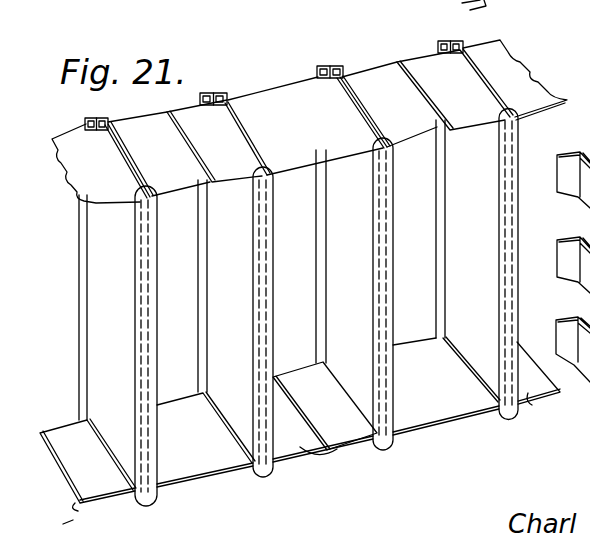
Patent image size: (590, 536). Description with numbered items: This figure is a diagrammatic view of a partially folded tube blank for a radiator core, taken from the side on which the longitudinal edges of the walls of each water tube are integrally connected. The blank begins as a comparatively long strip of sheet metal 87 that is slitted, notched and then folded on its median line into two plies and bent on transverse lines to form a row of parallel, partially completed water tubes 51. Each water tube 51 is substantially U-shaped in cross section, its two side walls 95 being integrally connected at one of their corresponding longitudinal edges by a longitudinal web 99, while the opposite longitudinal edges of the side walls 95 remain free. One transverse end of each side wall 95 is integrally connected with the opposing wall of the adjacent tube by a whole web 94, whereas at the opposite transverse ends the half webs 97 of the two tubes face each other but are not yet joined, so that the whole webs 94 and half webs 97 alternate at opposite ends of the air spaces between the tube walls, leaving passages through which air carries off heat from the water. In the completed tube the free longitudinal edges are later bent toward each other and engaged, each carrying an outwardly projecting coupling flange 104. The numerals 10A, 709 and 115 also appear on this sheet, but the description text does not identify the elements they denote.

The coupling flange 104 is at (103, 118).
The clip 10A is at (336, 67).
The half web 97 is at (164, 99).
The water tube 51 is at (240, 140).
The whole web 94 is at (487, 48).
The longitudinal web 99 is at (143, 258).
The side wall 95 is at (262, 270).
The strip of sheet metal 87 is at (331, 415).
The brackets 709 is at (588, 224).
The bracket 115 is at (564, 330).